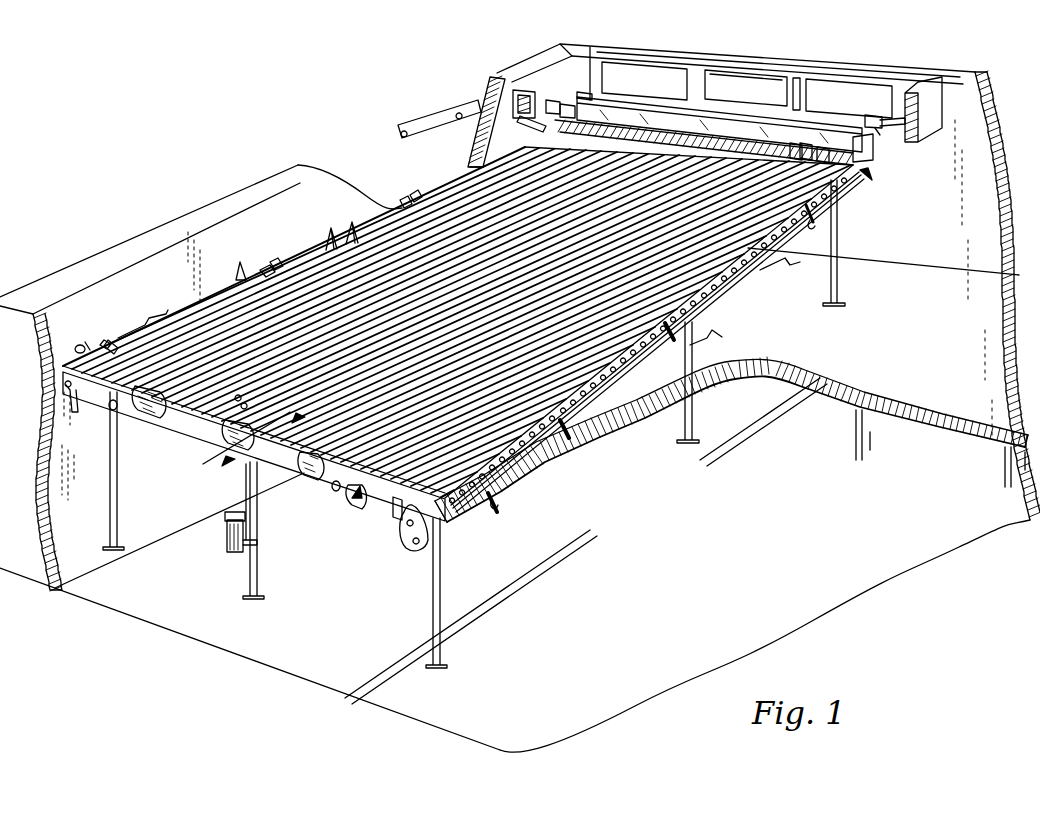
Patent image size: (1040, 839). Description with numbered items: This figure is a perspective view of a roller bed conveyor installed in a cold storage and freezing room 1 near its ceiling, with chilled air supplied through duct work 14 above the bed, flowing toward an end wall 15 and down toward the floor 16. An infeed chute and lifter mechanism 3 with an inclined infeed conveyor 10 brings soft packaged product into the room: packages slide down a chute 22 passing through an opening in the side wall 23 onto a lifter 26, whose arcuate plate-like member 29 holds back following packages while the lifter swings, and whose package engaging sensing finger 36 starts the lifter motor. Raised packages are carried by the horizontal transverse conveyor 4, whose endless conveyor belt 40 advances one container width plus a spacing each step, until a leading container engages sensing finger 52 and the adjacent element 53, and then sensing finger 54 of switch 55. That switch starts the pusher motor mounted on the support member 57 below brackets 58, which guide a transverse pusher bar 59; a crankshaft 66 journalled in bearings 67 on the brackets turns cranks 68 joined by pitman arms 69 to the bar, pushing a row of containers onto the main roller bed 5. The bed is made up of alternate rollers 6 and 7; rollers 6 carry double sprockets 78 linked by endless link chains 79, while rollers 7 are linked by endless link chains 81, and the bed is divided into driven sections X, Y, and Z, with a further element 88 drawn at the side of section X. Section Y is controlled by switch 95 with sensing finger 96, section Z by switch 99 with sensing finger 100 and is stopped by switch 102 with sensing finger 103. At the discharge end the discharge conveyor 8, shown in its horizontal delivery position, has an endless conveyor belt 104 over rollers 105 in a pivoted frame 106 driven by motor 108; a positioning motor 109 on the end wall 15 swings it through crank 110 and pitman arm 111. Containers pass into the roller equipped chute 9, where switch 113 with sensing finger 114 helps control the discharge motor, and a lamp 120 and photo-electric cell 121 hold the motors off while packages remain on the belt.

The cold storage and freezing room 1 is at (905, 562).
The infeed chute and lifter mechanism 3 is at (551, 100).
The horizontal transverse conveyor 4 is at (866, 176).
The main roller bed 5 is at (472, 193).
The rollers 6 is at (352, 222).
The rollers 7 is at (331, 228).
The discharge conveyor 8 is at (357, 497).
The chute 9 is at (577, 452).
The inclined infeed conveyor 10 is at (433, 116).
The duct work 14 is at (800, 80).
The end wall 15 is at (32, 514).
The floor 16 is at (872, 531).
The chute 22 is at (528, 90).
The side wall 23 is at (500, 75).
The lifter 26 is at (546, 122).
The arcuate plate-like member 29 is at (522, 133).
The package engaging sensing finger 36 is at (566, 104).
The endless conveyor belt 40 is at (652, 135).
The sensing finger 52 is at (822, 147).
The clip 53 is at (800, 145).
The sensing finger 54 is at (866, 160).
The switch 55 is at (872, 115).
The wall portion or support member 57 is at (704, 60).
The brackets 58 is at (895, 125).
The transverse pusher bar 59 is at (727, 116).
The crankshaft 66 is at (786, 78).
The bearings 67 is at (596, 93).
The cranks 68 is at (923, 109).
The pitman arms 69 is at (878, 138).
The double sprockets 78 is at (737, 274).
The endless link chains 79 is at (716, 290).
The endless link chains 81 is at (241, 275).
The hook 88 is at (812, 224).
The switch 95 is at (416, 190).
The sensing finger 96 is at (404, 200).
The switch 99 is at (280, 262).
The sensing finger 100 is at (265, 270).
The switch 102 is at (115, 342).
The sensing finger 103 is at (103, 340).
The endless conveyor belt 104 is at (325, 470).
The rollers 105 is at (70, 386).
The frame 106 is at (180, 440).
The motor 108 is at (413, 550).
The positioning motor 109 is at (232, 553).
The crank 110 is at (258, 548).
The pitman arm 111 is at (250, 478).
The switch 113 is at (592, 412).
The sensing finger 114 is at (626, 422).
The lamp 120 is at (500, 502).
The photo-electric cell 121 is at (87, 350).
The roller bed section X is at (780, 258).
The roller bed section Y is at (707, 342).
The roller bed section Z is at (143, 311).